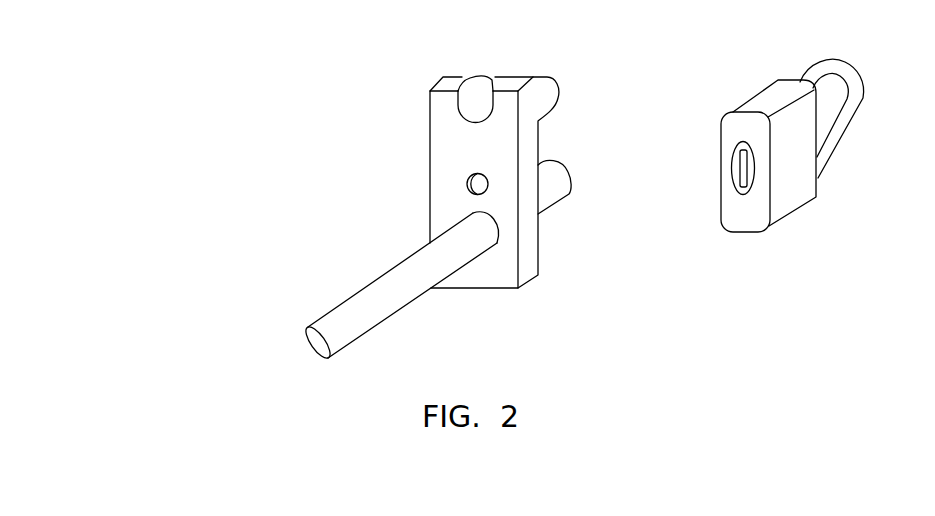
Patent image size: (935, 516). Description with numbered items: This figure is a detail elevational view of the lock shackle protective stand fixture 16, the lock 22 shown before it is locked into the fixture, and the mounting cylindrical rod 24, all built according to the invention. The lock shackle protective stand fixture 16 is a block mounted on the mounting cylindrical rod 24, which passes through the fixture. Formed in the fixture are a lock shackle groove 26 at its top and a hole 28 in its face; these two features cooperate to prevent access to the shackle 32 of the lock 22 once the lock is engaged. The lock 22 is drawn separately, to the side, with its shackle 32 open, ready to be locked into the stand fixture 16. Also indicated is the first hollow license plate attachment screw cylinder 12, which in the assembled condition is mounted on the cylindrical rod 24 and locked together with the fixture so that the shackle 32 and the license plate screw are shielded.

The first hollow license plate attachment screw cylinder 12 is at (923, 195).
The lock shackle protective stand fixture 16 is at (542, 93).
The lock 22 is at (765, 100).
The mounting cylindrical rod 24 is at (555, 173).
The lock shackle groove 26 is at (470, 78).
The hole 28 is at (462, 181).
The shackle 32 is at (857, 78).